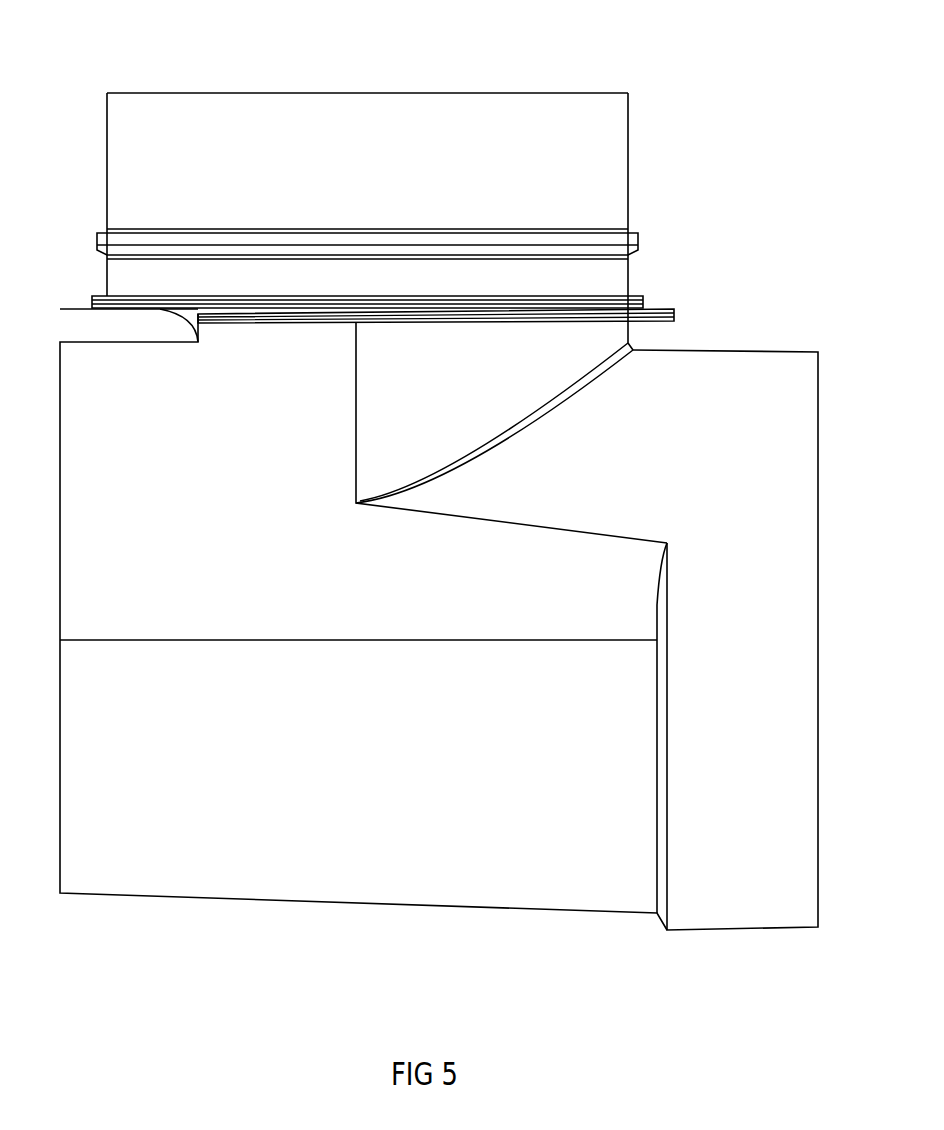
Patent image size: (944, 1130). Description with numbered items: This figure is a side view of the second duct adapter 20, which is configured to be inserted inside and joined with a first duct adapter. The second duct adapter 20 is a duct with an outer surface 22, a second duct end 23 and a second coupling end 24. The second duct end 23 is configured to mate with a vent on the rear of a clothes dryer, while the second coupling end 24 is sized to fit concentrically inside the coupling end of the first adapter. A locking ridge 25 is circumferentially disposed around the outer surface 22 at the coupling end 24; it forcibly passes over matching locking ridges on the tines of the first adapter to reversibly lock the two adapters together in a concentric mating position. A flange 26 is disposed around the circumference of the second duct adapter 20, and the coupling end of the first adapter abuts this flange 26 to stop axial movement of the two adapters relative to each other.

The second duct adapter 20 is at (262, 938).
The outer surface 22 is at (107, 177).
The second duct end 23 is at (820, 761).
The second coupling end 24 is at (112, 90).
The locking ridge 25 is at (97, 242).
The flange 26 is at (86, 303).